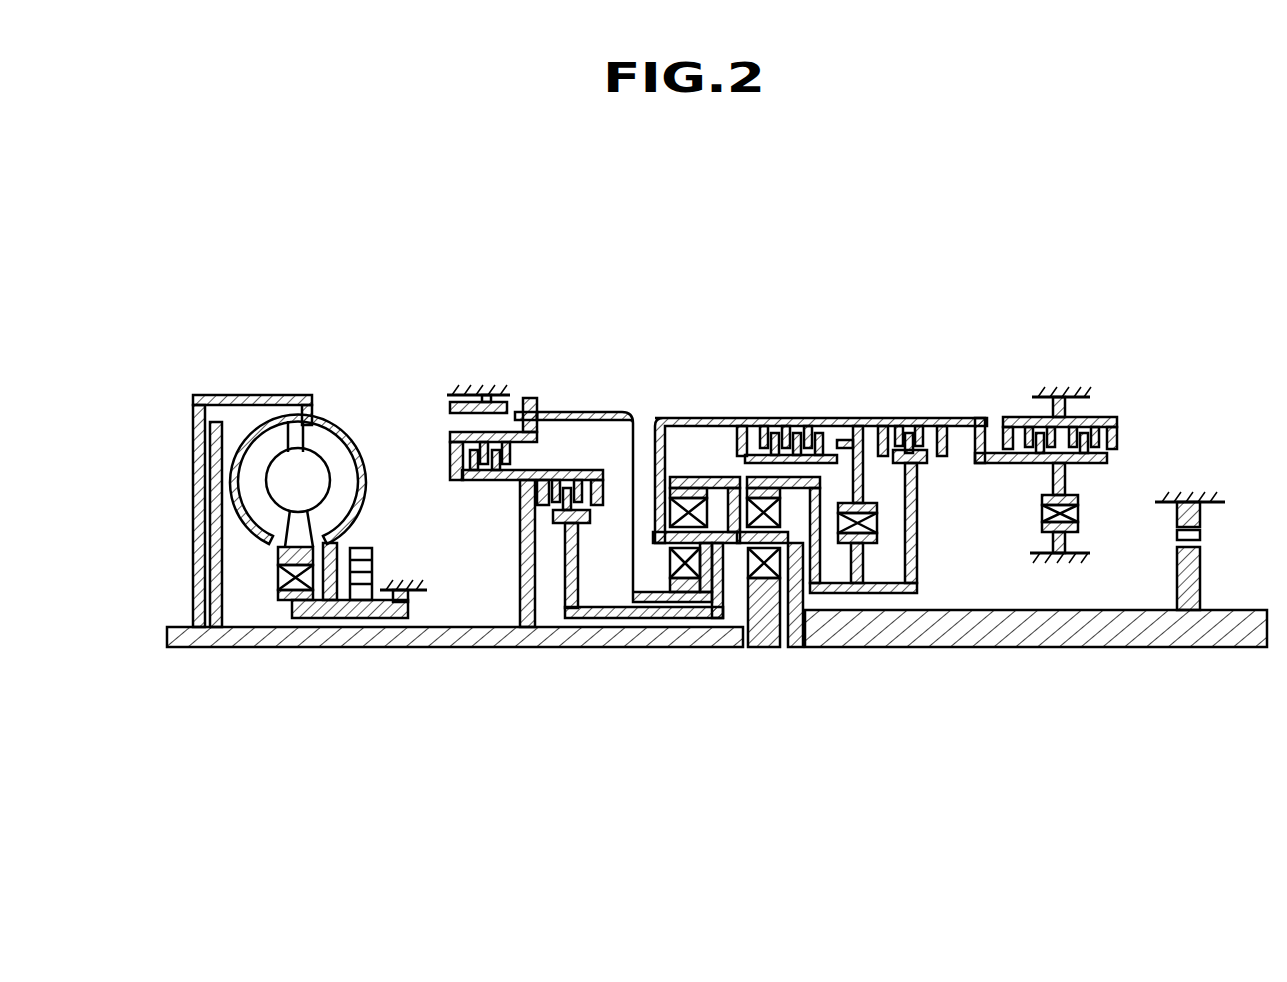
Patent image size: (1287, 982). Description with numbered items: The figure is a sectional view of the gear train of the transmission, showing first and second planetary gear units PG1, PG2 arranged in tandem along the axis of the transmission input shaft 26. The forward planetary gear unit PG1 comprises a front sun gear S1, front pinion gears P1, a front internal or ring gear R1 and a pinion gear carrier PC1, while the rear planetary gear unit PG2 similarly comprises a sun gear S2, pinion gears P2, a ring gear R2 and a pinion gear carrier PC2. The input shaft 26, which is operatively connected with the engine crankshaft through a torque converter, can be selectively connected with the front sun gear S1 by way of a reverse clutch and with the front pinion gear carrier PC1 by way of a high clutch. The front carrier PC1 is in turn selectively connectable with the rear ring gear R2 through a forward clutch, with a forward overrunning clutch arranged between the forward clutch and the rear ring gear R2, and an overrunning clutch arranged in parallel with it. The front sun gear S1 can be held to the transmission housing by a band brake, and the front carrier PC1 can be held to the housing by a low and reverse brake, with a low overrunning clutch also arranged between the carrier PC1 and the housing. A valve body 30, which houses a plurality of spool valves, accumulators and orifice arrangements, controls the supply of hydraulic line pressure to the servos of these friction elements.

The transmission input shaft 26 is at (432, 647).
The valve body 30 is at (1190, 630).
The first planetary gear unit PG1 is at (750, 512).
The second planetary gear unit PG2 is at (812, 526).
The front ring gear R1 is at (690, 480).
The rear ring gear R2 is at (747, 478).
The front pinion gears P1 is at (694, 550).
The pinion gears P2 is at (798, 597).
The front sun gear S1 is at (678, 593).
The sun gear S2 is at (757, 597).
The front pinion gear carrier PC1 is at (722, 600).
The rear pinion gear carrier PC2 is at (790, 550).